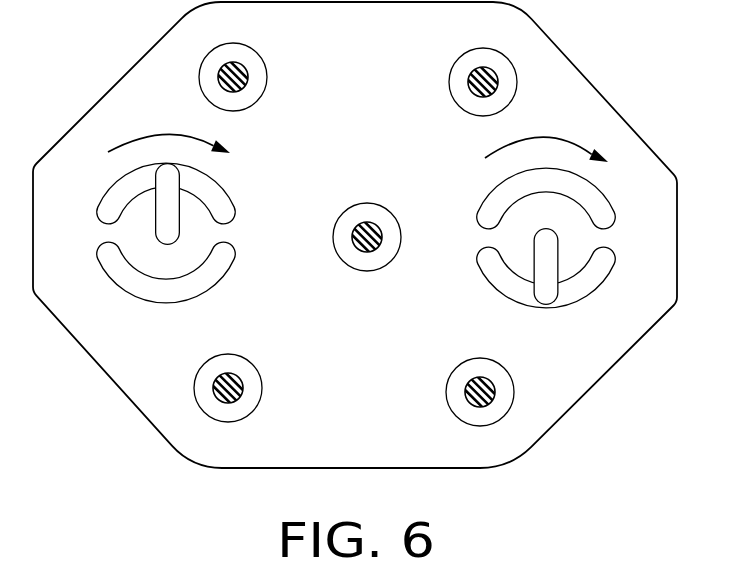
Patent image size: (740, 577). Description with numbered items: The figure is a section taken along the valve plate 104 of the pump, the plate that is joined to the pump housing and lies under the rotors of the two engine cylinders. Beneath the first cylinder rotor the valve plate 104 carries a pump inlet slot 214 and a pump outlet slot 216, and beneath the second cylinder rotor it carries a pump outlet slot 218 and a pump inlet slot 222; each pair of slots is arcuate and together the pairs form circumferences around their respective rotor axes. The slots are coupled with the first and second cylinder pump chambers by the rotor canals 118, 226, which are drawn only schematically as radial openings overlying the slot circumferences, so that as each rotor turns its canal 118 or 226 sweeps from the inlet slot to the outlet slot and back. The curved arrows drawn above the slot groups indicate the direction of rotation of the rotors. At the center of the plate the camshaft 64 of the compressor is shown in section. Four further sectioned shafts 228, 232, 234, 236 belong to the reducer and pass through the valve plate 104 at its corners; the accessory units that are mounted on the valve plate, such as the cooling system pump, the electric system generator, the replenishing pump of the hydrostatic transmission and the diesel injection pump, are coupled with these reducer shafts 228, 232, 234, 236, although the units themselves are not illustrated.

The valve plate 104 is at (573, 86).
The camshaft 64 is at (357, 247).
The rotor canal 118 is at (164, 215).
The pump inlet slot 214 is at (138, 290).
The pump outlet slot 216 is at (213, 192).
The pump outlet slot 218 is at (515, 193).
The pump inlet slot 222 is at (497, 272).
The rotor canal 226 is at (548, 250).
The reducer shaft 228 is at (240, 394).
The reducer shaft 232 is at (245, 70).
The reducer shaft 234 is at (477, 72).
The reducer shaft 236 is at (467, 388).